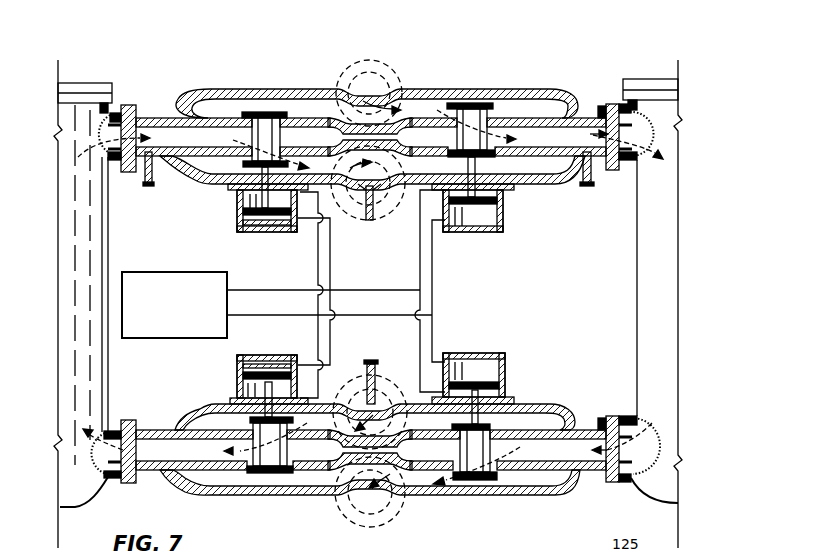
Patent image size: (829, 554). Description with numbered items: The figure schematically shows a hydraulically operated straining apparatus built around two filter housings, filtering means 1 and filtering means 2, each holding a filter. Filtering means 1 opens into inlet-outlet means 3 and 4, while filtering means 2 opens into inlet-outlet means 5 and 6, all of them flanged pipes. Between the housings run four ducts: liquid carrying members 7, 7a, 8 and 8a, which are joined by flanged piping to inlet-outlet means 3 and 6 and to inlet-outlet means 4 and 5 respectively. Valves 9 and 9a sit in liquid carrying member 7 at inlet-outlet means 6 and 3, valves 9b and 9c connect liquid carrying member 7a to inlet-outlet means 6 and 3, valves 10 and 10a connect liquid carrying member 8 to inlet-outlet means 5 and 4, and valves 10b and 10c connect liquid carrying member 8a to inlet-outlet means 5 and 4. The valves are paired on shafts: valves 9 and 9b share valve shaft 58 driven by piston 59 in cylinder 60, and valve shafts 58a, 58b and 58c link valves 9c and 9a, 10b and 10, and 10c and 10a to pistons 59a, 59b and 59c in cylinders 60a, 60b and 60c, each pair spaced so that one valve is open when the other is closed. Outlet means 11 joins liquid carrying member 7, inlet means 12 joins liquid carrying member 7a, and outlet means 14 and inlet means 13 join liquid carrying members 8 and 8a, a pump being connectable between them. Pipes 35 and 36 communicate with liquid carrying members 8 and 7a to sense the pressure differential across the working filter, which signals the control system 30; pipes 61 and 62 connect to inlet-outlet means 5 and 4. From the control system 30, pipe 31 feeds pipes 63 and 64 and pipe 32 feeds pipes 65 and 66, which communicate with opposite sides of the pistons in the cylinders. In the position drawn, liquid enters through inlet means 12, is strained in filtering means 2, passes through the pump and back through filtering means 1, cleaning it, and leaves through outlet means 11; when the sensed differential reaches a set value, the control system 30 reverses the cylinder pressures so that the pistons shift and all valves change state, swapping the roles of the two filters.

The filtering means 1 is at (637, 256).
The filtering means 2 is at (90, 243).
The inlet-outlet means 3 is at (630, 430).
The inlet-outlet means 4 is at (625, 148).
The inlet-outlet means 5 is at (110, 152).
The inlet-outlet means 6 is at (117, 432).
The liquid carrying member 7 is at (223, 483).
The liquid carrying member 7a is at (544, 420).
The liquid carrying member 8 is at (520, 165).
The liquid carrying member 8a is at (530, 107).
The valve 9 is at (268, 474).
The valve 9a is at (478, 480).
The valve 9b is at (233, 405).
The valve 9c is at (516, 404).
The valve 10 is at (230, 180).
The valve 10a is at (483, 152).
The valve 10b is at (256, 112).
The valve 10c is at (497, 100).
The outlet means 11 is at (402, 510).
The inlet means 12 is at (353, 378).
The inlet means 13 is at (388, 66).
The outlet means 14 is at (393, 201).
The control system 30 is at (177, 272).
The fluid carrying pipe 31 is at (259, 292).
The fluid carrying pipe 32 is at (268, 315).
The pipe 35 is at (369, 213).
The pipe 36 is at (375, 367).
The valve shaft 58 is at (248, 386).
The valve shaft 58a is at (514, 483).
The valve shaft 58b is at (268, 135).
The valve shaft 58c is at (477, 118).
The piston 59 is at (240, 368).
The piston 59a is at (475, 380).
The piston 59b is at (262, 232).
The piston 59c is at (467, 226).
The cylinder 60 is at (273, 357).
The cylinder 60a is at (494, 356).
The cylinder 60b is at (283, 232).
The cylinder 60c is at (492, 232).
The pipe 61 is at (146, 188).
The pipe 62 is at (589, 186).
The pipe 63 is at (334, 276).
The pipe 64 is at (418, 260).
The pipe 65 is at (318, 303).
The pipe 66 is at (437, 320).